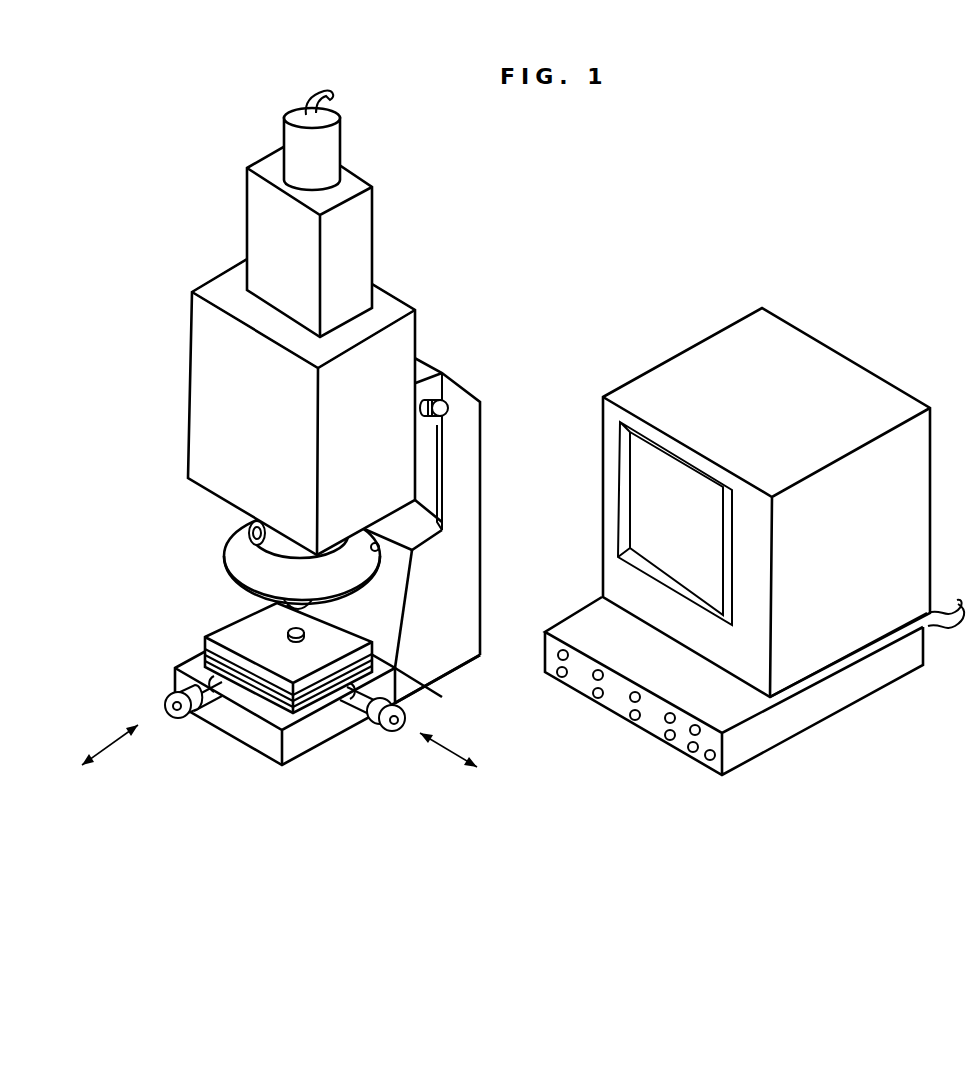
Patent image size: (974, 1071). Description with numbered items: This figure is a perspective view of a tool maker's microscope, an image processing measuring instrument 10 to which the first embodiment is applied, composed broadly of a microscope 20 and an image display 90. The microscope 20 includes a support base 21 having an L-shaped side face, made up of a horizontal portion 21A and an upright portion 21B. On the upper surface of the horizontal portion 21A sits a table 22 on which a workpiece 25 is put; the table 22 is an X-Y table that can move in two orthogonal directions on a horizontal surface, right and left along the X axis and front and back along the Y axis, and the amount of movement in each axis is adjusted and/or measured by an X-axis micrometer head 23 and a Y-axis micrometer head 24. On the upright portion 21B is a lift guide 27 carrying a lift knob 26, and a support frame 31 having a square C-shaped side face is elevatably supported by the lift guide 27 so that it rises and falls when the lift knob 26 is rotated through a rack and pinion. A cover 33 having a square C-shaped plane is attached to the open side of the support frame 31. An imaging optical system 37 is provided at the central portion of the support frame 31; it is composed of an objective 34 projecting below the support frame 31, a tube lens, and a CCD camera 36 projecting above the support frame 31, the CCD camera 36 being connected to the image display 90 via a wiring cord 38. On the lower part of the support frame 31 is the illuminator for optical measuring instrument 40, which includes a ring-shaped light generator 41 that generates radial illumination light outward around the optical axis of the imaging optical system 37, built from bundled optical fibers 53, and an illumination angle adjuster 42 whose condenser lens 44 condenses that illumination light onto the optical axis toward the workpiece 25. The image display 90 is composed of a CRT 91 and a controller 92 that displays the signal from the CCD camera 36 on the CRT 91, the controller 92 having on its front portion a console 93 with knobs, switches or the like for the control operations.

The microscope system 10 is at (597, 258).
The microscope 20 is at (387, 266).
The support base 21 is at (467, 552).
The horizontal portion 21A is at (309, 740).
The upright portion 21B is at (468, 485).
The table 22 is at (404, 690).
The X-axis micrometer head 23 is at (391, 735).
The Y-axis micrometer head 24 is at (181, 722).
The workpiece 25 is at (292, 642).
The lift knob 26 is at (446, 403).
The lift guide 27 is at (428, 442).
The support frame 31 is at (388, 307).
The cover 33 is at (204, 396).
The objective 34 is at (322, 620).
The CCD camera 36 is at (363, 228).
The imaging optical system 37 is at (333, 158).
The wiring cord 38 is at (336, 100).
The illuminator for optical measuring instrument 40 is at (216, 533).
The ring-shaped light generator 41 is at (276, 541).
The illumination angle adjuster 42 is at (224, 568).
The condenser lens 44 is at (243, 579).
The optical fiber 53 is at (407, 568).
The image display 90 is at (800, 315).
The CRT 91 is at (667, 377).
The controller 92 is at (810, 705).
The console 93 is at (611, 700).